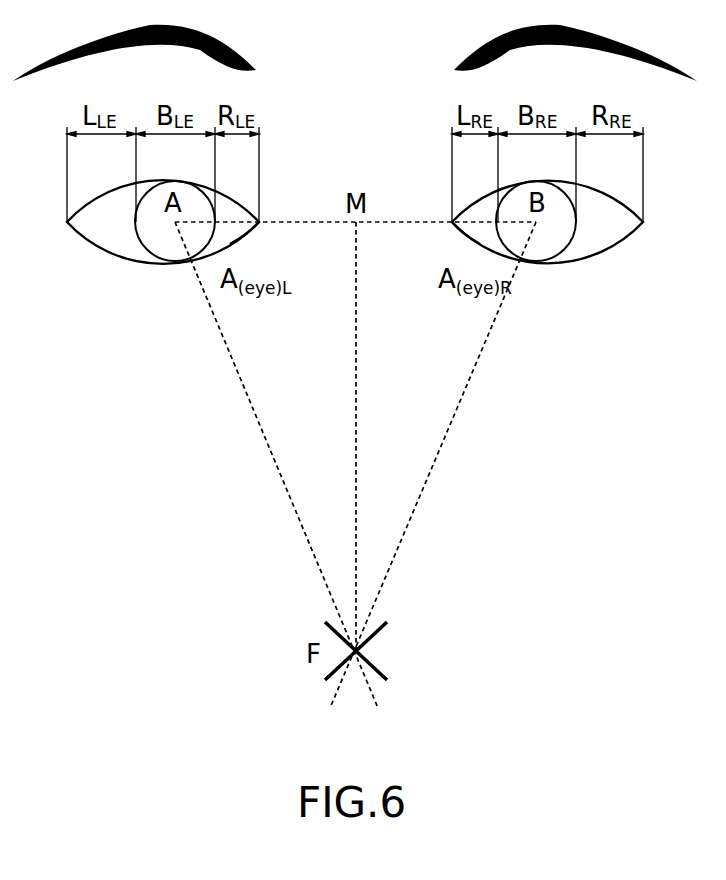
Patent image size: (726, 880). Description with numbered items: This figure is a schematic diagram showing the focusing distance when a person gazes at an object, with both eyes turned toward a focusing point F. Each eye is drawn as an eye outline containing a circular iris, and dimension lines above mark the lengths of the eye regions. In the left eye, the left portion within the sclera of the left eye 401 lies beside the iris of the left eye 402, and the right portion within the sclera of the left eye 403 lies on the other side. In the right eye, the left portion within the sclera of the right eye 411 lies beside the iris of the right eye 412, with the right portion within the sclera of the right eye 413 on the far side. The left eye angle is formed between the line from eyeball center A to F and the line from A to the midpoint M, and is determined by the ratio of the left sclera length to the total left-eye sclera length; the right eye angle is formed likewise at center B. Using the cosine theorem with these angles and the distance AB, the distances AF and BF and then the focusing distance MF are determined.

The left portion within the sclera of the left eye 401 is at (90, 237).
The iris of the left eye 402 is at (153, 247).
The right portion within the sclera of the left eye 403 is at (245, 232).
The left portion within the sclera of the right eye 411 is at (468, 232).
The iris of the right eye 412 is at (527, 263).
The right portion within the sclera of the right eye 413 is at (587, 240).